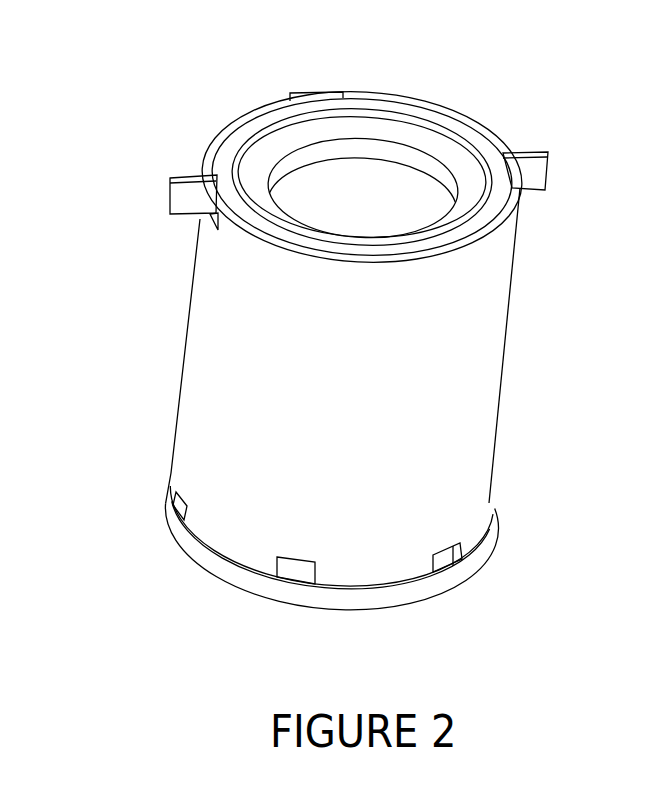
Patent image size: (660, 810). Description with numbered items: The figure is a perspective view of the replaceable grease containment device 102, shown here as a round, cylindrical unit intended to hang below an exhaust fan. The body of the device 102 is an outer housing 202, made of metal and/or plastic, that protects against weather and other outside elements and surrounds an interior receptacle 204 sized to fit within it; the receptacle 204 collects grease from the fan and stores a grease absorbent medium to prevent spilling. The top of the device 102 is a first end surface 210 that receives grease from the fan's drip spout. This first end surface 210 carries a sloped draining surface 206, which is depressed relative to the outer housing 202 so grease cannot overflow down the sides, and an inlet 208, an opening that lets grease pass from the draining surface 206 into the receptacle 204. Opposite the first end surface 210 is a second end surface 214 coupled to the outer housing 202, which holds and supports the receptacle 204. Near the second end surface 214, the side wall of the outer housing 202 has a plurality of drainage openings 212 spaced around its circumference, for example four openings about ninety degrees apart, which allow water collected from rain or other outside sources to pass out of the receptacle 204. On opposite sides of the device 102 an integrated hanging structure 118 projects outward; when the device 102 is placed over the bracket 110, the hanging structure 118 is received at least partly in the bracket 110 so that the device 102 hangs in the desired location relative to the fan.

The replaceable grease containment device 102 is at (515, 385).
The bracket 110 is at (138, 217).
The integrated hanging structure 118 is at (172, 178).
The outer housing 202 is at (183, 367).
The interior receptacle 204 is at (409, 191).
The draining surface 206 is at (334, 127).
The inlet 208 is at (296, 166).
The first end surface 210 is at (407, 122).
The drainage opening 212 is at (293, 583).
The second end surface 214 is at (220, 577).